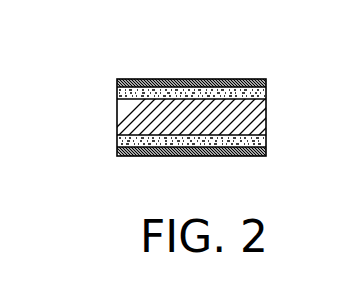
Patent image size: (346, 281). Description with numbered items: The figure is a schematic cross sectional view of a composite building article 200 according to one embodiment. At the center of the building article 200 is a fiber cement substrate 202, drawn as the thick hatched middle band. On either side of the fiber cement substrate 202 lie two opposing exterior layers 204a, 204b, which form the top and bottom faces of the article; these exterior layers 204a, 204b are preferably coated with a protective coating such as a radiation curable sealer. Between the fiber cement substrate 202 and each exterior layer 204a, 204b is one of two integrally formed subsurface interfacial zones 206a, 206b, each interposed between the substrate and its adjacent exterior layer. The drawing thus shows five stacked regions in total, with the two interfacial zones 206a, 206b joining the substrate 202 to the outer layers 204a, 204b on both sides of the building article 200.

The composite building article 200 is at (181, 113).
The fiber cement substrate 202 is at (266, 117).
The exterior layer 204a is at (199, 79).
The exterior layer 204b is at (140, 156).
The subsurface interfacial zone 206a is at (117, 93).
The subsurface interfacial zone 206b is at (117, 141).